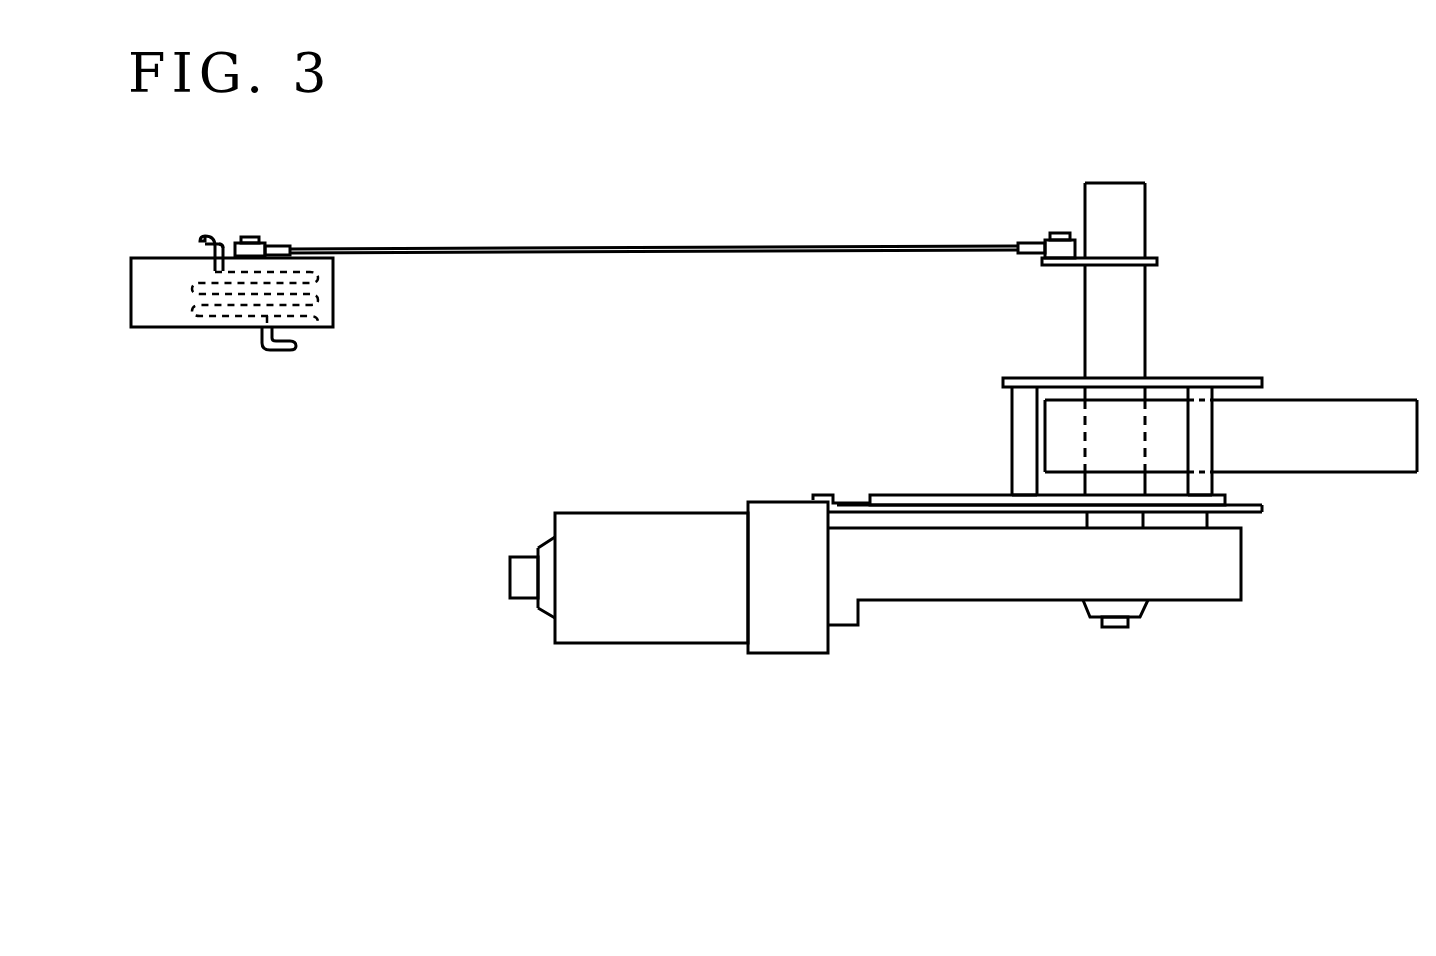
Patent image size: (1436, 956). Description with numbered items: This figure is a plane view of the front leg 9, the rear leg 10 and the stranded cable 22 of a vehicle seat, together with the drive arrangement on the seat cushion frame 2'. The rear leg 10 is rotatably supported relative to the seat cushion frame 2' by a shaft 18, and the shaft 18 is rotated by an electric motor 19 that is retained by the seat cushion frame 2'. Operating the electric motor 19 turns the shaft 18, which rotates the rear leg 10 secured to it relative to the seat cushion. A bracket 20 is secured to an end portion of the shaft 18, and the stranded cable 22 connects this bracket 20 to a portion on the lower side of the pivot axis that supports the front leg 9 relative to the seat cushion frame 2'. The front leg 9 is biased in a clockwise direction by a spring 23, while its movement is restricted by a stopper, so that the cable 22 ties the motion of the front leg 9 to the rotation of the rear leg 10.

The seat cushion frame 2' is at (1095, 510).
The front leg 9 is at (336, 303).
The rear leg 10 is at (1352, 398).
The shaft 18 is at (1133, 325).
The electric motor 19 is at (660, 643).
The bracket 20 is at (1157, 262).
The stranded cable 22 is at (747, 246).
The spring 23 is at (228, 327).